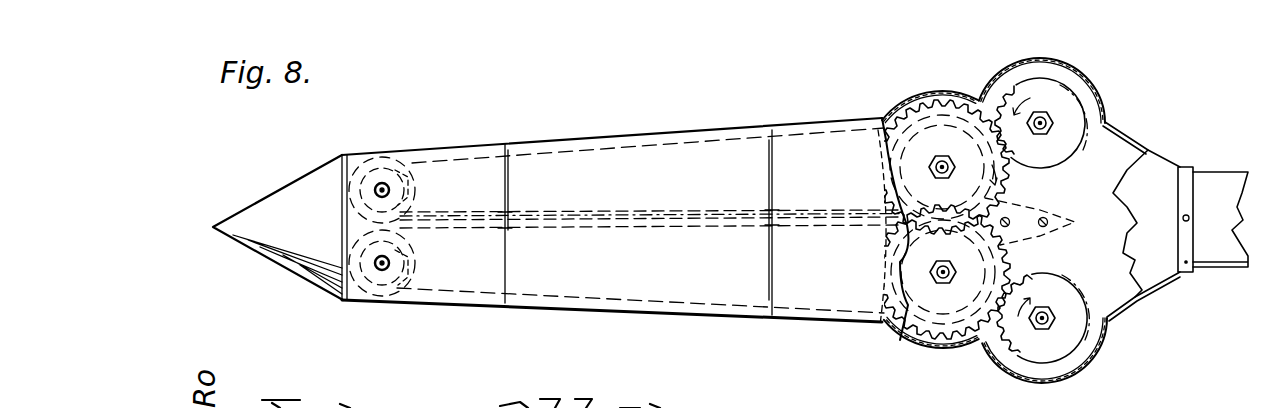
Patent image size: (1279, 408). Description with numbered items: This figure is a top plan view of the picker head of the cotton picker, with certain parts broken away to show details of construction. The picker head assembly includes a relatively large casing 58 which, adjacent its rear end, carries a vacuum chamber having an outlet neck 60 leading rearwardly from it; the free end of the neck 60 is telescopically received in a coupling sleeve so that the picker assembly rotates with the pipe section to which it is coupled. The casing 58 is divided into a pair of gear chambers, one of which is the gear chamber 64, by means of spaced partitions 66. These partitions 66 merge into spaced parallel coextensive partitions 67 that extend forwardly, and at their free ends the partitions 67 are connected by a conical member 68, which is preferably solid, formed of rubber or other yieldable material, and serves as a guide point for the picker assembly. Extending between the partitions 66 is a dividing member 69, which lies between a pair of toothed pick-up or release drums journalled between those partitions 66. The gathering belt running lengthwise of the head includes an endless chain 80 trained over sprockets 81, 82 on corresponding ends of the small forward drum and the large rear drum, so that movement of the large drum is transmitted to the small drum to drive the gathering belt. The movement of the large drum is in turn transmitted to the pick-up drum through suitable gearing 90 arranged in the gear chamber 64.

The casing 58 is at (1048, 56).
The outlet neck 60 is at (1215, 180).
The gear chamber 64 is at (1128, 292).
The partitions 66 is at (1105, 142).
The partitions 67 is at (723, 143).
The conical member 68 is at (267, 212).
The dividing member 69 is at (1037, 202).
The endless chain 80 is at (562, 145).
The sprocket 81 is at (402, 172).
The sprocket 82 is at (903, 347).
The gearing 90 is at (1012, 92).